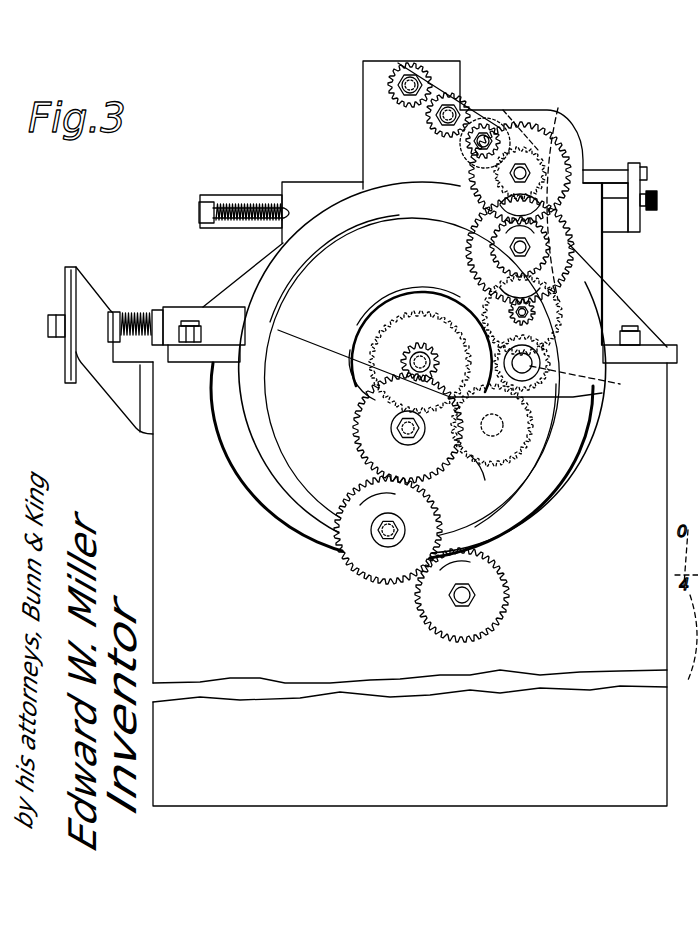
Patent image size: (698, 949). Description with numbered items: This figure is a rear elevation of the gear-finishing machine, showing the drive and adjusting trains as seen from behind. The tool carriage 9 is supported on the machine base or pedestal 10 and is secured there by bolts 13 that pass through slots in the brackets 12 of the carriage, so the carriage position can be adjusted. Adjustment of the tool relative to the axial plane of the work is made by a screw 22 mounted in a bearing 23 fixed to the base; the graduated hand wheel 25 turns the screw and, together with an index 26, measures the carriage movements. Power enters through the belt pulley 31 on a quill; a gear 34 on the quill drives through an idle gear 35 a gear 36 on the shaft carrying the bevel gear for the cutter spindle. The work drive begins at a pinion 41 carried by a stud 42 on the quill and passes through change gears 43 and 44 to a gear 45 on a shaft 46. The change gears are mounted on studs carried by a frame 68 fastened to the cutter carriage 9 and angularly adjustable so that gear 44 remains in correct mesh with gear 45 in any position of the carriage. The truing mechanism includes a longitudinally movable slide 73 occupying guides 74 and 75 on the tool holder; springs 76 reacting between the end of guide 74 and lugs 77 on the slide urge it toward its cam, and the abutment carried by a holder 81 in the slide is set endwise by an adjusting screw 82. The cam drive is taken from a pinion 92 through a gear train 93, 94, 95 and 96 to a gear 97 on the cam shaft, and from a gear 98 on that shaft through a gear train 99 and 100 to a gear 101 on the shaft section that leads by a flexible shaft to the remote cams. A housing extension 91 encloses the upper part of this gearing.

The tool carriage 9 is at (325, 280).
The machine base or pedestal 10 is at (154, 487).
The brackets of the carriage 12 is at (654, 345).
The bolts 13 is at (190, 322).
The screw 22 is at (135, 314).
The bearing 23 is at (108, 378).
The graduated hand wheel 25 is at (65, 298).
The index 26 is at (90, 297).
The belt pulley 31 is at (397, 302).
The gear 34 is at (375, 350).
The idle gear 35 is at (470, 422).
The gear 36 is at (548, 368).
The pinion 41 is at (420, 350).
The stud 42 is at (415, 364).
The change gear 43 is at (366, 413).
The change gear 44 is at (358, 556).
The gear 45 is at (425, 612).
The shaft 46 is at (460, 606).
The frame 68 is at (497, 480).
The slide 73 is at (262, 200).
The guide 74 is at (300, 205).
The guide 75 is at (612, 226).
The springs 76 is at (236, 208).
The lugs 77 is at (205, 210).
The holder 81 is at (605, 173).
The adjusting screw 82 is at (651, 196).
The housing extension 91 is at (380, 131).
The pinion 92 is at (586, 382).
The gear 93 is at (478, 300).
The gear 94 is at (508, 312).
The gear 95 is at (490, 213).
The gear 96 is at (496, 244).
The gear 97 is at (558, 161).
The gear 98 is at (564, 193).
The gear 99 is at (490, 132).
The gear 100 is at (455, 122).
The gear 101 is at (393, 87).